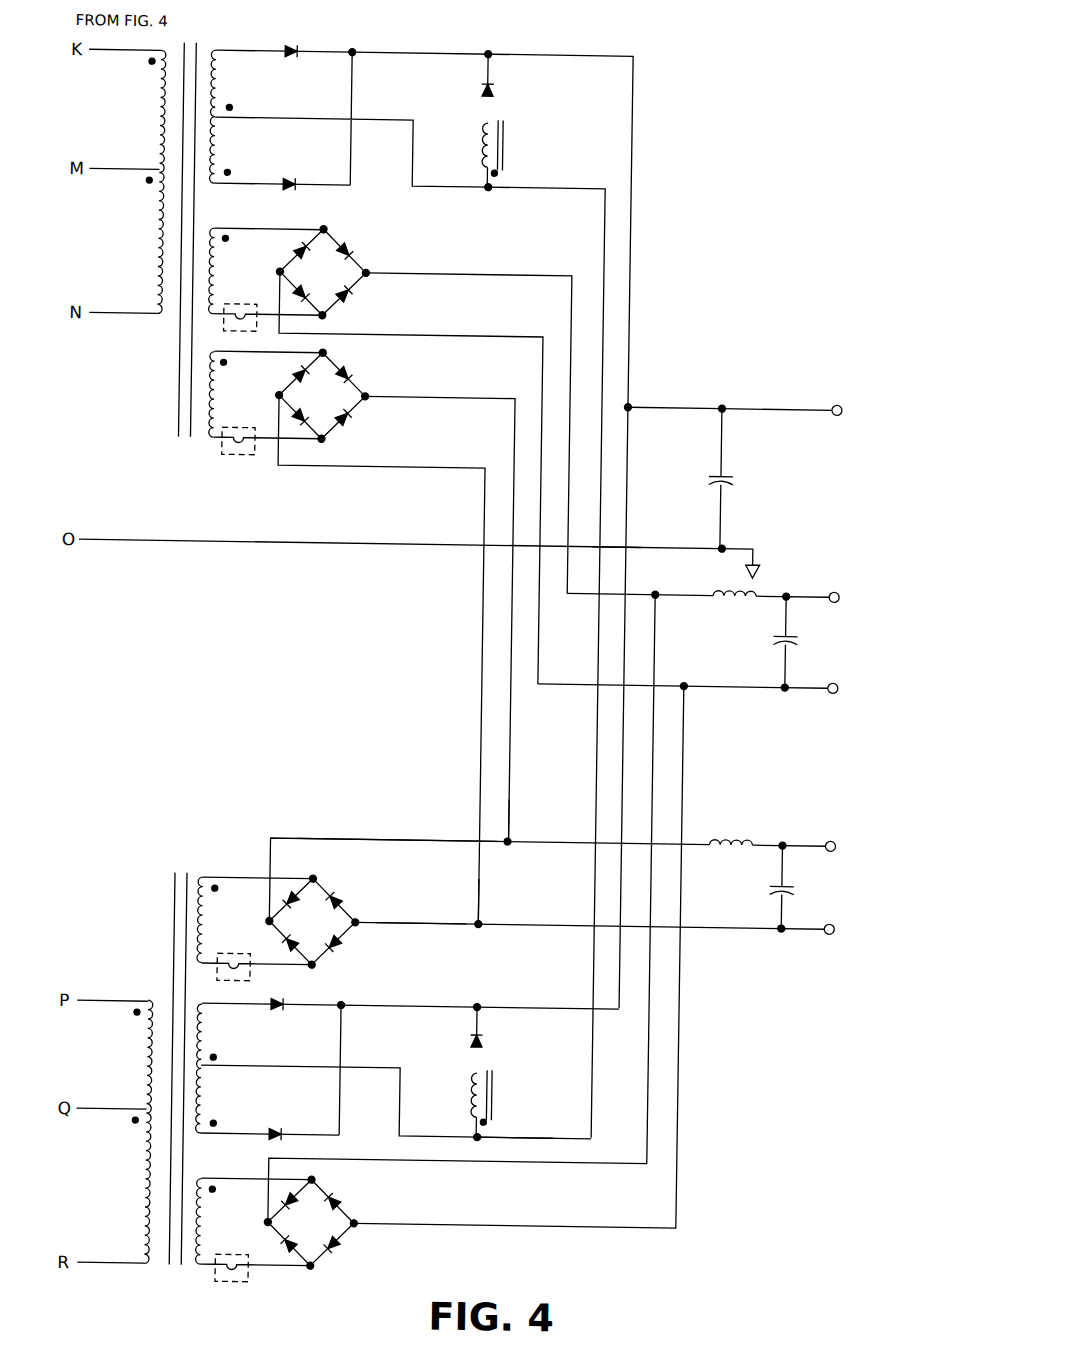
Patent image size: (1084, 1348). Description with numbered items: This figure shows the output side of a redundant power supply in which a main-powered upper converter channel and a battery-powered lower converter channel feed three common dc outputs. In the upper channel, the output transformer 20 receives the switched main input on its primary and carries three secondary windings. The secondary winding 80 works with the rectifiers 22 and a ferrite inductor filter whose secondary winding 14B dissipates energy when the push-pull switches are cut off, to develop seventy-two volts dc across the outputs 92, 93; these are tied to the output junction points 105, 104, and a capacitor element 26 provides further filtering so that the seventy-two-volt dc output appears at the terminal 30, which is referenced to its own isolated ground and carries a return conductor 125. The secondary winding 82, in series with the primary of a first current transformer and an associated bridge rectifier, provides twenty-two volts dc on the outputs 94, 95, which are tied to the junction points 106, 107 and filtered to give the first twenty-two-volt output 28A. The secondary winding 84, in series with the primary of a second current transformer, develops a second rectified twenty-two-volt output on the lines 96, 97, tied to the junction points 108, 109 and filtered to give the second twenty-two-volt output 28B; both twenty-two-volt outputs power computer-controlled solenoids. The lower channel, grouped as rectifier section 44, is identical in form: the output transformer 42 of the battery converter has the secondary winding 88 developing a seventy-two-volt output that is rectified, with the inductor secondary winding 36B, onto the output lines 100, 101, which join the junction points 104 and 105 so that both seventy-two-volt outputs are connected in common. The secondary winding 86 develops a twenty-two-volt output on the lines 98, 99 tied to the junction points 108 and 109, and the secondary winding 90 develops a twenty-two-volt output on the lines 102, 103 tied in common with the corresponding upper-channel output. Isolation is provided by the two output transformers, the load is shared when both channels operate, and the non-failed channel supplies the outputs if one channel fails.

The output transformer 20 is at (196, 46).
The rectifiers 22 is at (296, 36).
The secondary winding 80 is at (221, 92).
The transformer L3 secondary winding 14B is at (480, 147).
The output 92 is at (598, 214).
The output 93 is at (624, 214).
The secondary winding 82 is at (218, 254).
The secondary winding 84 is at (218, 378).
The output 94 is at (569, 275).
The output 95 is at (538, 337).
The line 96 is at (512, 399).
The line 97 is at (482, 469).
The output junction point 104 is at (624, 404).
The capacitor element 26 is at (736, 392).
The 72-volt dc output 30 is at (795, 405).
The output junction point 105 is at (606, 545).
The first 22-volt output junction point 106 is at (654, 591).
The first 22-volt output junction point 107 is at (684, 682).
The first 22-volt dc output 28A is at (851, 657).
The return conductor O 125 is at (315, 547).
The second rectifier section 44 is at (340, 829).
The output transformer 42 is at (194, 870).
The secondary winding 86 is at (218, 902).
The line 98 is at (438, 841).
The line 99 is at (438, 924).
The junction point 108 is at (511, 840).
The junction point 109 is at (482, 923).
The output line 100 is at (443, 1007).
The secondary winding 88 is at (221, 1043).
The inductor L6 secondary 36B is at (483, 1099).
The output line 101 is at (562, 1136).
The line 102 is at (627, 1161).
The line 103 is at (643, 1225).
The secondary winding 90 is at (221, 1204).
The second 22-volt dc output 28B is at (851, 906).